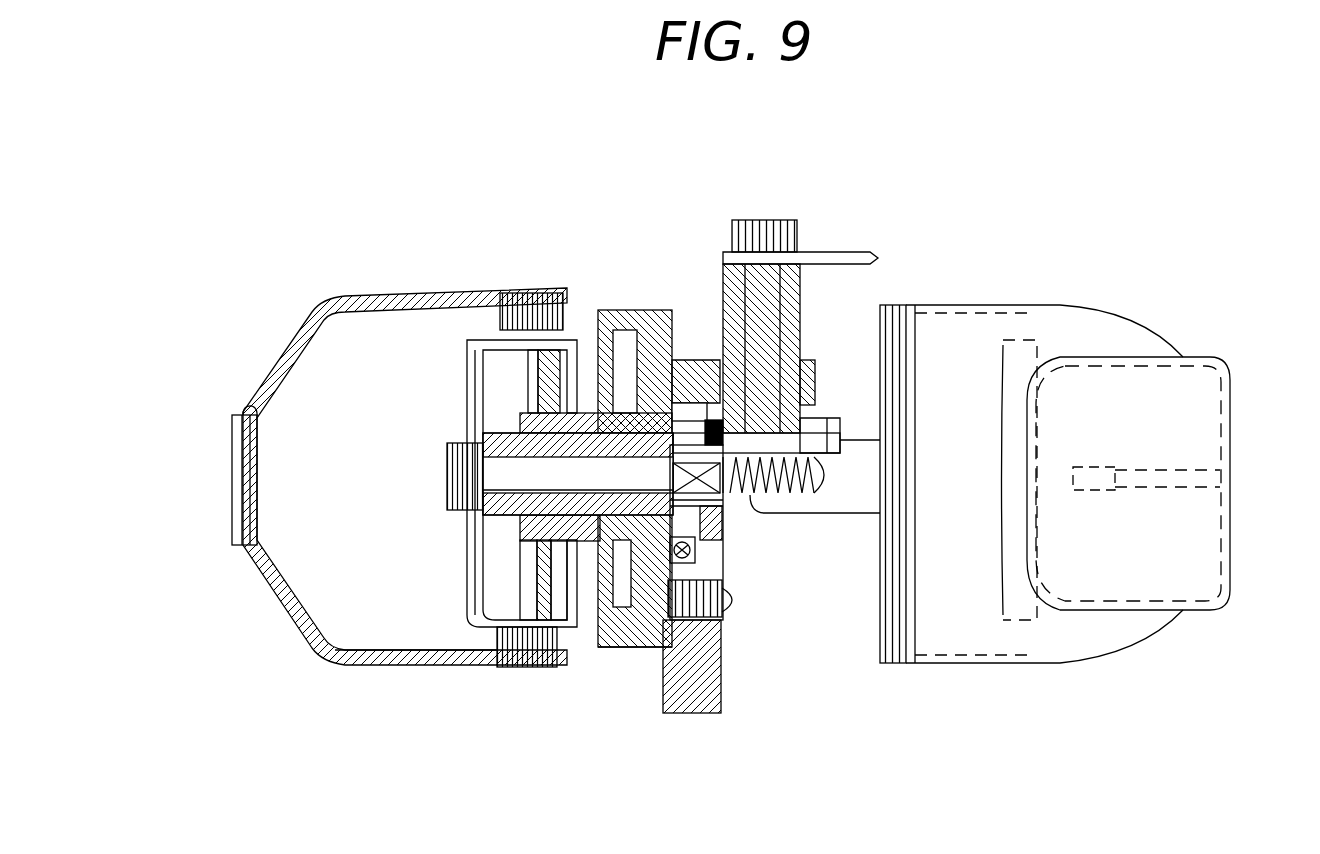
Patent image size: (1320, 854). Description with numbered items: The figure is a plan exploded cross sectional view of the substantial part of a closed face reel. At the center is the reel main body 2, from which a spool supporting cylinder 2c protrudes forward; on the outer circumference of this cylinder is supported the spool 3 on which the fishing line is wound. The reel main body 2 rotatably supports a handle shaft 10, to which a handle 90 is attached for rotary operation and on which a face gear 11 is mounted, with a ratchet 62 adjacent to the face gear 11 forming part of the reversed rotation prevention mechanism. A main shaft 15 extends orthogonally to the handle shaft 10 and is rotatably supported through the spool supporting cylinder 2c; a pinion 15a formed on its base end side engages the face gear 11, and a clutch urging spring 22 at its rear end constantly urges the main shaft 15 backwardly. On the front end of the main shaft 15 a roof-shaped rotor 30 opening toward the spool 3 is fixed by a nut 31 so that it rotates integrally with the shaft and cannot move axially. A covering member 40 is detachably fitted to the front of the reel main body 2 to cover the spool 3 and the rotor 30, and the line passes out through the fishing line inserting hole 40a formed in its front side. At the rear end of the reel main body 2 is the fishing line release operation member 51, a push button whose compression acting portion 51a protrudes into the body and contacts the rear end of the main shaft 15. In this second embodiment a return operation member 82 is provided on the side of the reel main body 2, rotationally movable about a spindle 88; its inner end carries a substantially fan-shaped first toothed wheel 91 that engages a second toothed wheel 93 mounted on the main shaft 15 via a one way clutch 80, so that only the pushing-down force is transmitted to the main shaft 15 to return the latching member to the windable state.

The reel main body 2 is at (645, 312).
The spool supporting cylinder 2c is at (495, 667).
The spool 3 is at (583, 545).
The handle shaft 10 is at (765, 282).
The face gear 11 is at (832, 420).
The main shaft 15 is at (560, 475).
The pinion 15a is at (633, 648).
The clutch urging spring 22 is at (803, 507).
The rotor 30 is at (420, 658).
The nut 31 is at (470, 505).
The covering member 40 is at (375, 293).
The fishing line inserting hole 40a is at (232, 445).
The fishing line release operation member 51 is at (1183, 357).
The compression acting portion 51a is at (1095, 480).
The ratchet 62 is at (805, 390).
The one way clutch 80 is at (723, 530).
The return operation member 82 is at (725, 688).
The spindle 88 is at (697, 707).
The handle 90 is at (845, 256).
The first toothed wheel 91 is at (705, 565).
The second toothed wheel 93 is at (712, 440).